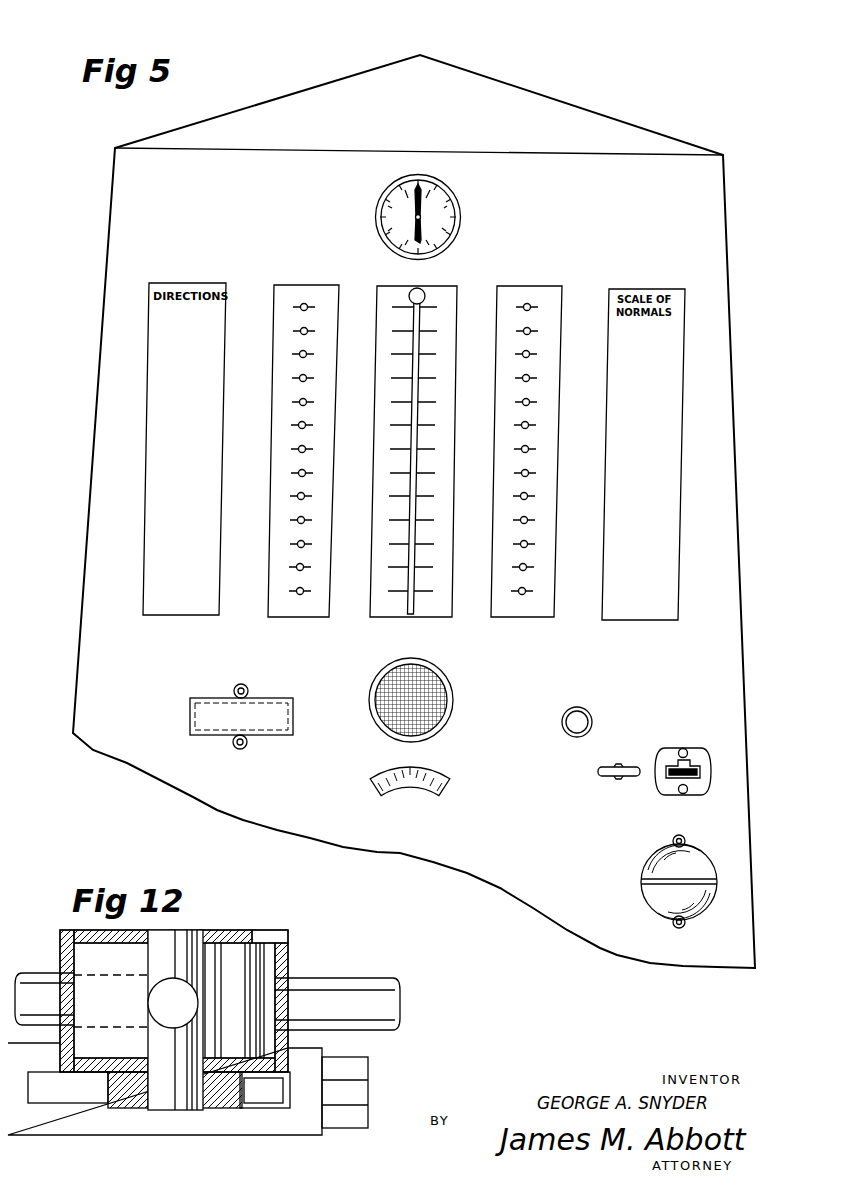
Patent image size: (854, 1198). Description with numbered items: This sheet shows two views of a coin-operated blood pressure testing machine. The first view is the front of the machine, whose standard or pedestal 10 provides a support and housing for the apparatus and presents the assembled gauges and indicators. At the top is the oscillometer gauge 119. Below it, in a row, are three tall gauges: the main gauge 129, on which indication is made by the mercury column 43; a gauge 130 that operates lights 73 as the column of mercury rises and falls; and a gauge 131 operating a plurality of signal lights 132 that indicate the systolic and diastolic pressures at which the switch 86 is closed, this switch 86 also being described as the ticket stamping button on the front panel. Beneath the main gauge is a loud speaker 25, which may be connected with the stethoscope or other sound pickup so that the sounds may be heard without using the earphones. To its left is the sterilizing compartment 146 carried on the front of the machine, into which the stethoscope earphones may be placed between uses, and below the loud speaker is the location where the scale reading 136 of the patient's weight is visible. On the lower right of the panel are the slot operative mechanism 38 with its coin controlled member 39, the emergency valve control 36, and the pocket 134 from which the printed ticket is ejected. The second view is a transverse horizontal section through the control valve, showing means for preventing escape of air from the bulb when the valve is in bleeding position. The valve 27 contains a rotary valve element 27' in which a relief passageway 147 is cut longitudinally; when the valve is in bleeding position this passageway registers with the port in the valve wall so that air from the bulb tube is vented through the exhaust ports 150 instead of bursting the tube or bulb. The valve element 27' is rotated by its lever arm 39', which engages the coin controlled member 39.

In FIG. 5, the standard or pedestal 10 is at (145, 203).
In FIG. 5, the oscillometer gauge 119 is at (470, 201).
In FIG. 5, the gauge 130 is at (293, 430).
In FIG. 5, the main gauge 129 is at (442, 434).
In FIG. 5, the gauge 131 is at (552, 434).
In FIG. 5, the signal lights 132 is at (531, 331).
In FIG. 5, the lights 73 is at (302, 380).
In FIG. 5, the mercury column 43 is at (413, 564).
In FIG. 5, the sterilizing compartment 146 is at (265, 698).
In FIG. 5, the loud speaker 25 is at (452, 688).
In FIG. 5, the scale reading 136 is at (440, 776).
In FIG. 5, the ticket stamping button 86 is at (585, 718).
In FIG. 5, the slot operative mechanism 38 is at (718, 749).
In FIG. 5, the coin controlled member 39 is at (723, 757).
In FIG. 5, the emergency valve control 36 is at (607, 777).
In FIG. 5, the pocket 134 is at (690, 870).
In FIG. 12, the valve 27 is at (234, 973).
In FIG. 12, the rotary valve element 27' is at (287, 962).
In FIG. 12, the exhaust ports 150 is at (267, 938).
In FIG. 12, the relief passageway 147 is at (259, 973).
In FIG. 12, the lever arm 39' is at (276, 1121).